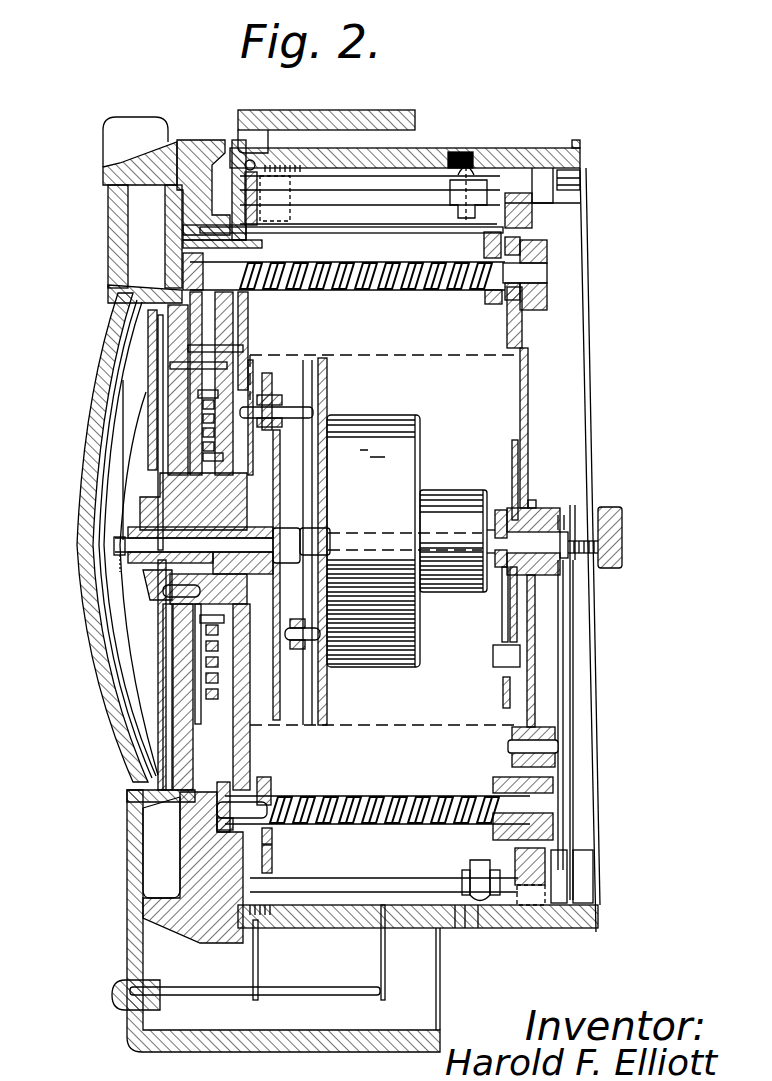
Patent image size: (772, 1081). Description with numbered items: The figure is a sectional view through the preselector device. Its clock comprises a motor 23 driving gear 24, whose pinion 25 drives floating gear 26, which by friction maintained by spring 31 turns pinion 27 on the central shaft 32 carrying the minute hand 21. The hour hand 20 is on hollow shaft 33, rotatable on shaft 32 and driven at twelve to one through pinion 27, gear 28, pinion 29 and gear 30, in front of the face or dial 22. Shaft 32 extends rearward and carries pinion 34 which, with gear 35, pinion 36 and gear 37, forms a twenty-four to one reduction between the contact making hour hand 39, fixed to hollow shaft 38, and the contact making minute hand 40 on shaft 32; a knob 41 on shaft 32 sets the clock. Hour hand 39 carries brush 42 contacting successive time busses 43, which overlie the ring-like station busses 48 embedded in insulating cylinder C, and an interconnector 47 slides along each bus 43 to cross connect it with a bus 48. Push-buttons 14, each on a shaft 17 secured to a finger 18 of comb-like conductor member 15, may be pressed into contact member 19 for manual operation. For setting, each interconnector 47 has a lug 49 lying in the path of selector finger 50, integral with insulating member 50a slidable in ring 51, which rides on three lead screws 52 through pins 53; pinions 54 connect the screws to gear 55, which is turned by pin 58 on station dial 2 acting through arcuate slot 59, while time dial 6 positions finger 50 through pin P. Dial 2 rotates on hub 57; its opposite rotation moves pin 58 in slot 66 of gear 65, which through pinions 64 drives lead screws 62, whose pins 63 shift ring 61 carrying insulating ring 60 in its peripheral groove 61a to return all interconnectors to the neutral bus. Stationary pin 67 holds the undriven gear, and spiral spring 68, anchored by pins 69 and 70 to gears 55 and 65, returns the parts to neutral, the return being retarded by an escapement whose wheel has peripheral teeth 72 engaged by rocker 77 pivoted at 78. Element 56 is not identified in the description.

The station index dial 2 is at (110, 230).
The time dial 6 is at (193, 152).
The push-buttons 14 is at (118, 993).
The comb-like conductor member 15 is at (262, 924).
The shaft 17 is at (323, 990).
The finger 18 is at (253, 968).
The contact member 19 is at (388, 962).
The hour hand 20 is at (128, 472).
The minute hand 21 is at (116, 499).
The face or dial 22 is at (158, 653).
The motor 23 is at (380, 427).
The gear 24 is at (327, 692).
The pinion 25 is at (300, 643).
The floating gear 26 is at (332, 587).
The pinion 27 is at (317, 503).
The gear 28 is at (282, 455).
The pinion 29 is at (263, 392).
The gear 30 is at (330, 603).
The spring 31 is at (320, 517).
The shaft 32 is at (377, 535).
The hollow shaft 33 is at (115, 541).
The pinion 34 is at (500, 510).
The gear 35 is at (502, 620).
The pinion 36 is at (503, 680).
The gear 37 is at (512, 447).
The hollow shaft 38 is at (538, 520).
The contact making hour hand 39 is at (563, 640).
The contact making minute hand 40 is at (575, 753).
The knob 41 is at (620, 518).
The brush 42 is at (567, 863).
The time busses 43 is at (407, 195).
The interconnector 47 is at (493, 168).
The station busses 48 is at (456, 172).
The projecting lug 49 is at (460, 212).
The selector finger 50 is at (530, 210).
The larger member of insulating material 50a is at (530, 243).
The ring 51 is at (483, 245).
The lead screw 52 is at (355, 291).
The pins 53 is at (497, 295).
The pinions 54 is at (200, 283).
The gear 55 is at (156, 320).
The core 56 is at (200, 541).
The hub 57 is at (150, 568).
The pin 58 is at (205, 365).
The arcuate slot 59 is at (230, 710).
The insulating ring 60 is at (272, 862).
The linearly movable ring 61 is at (275, 792).
The peripheral groove 61a is at (272, 838).
The lead screw 62 is at (372, 800).
The pins 63 is at (260, 778).
The pinion 64 is at (200, 820).
The gear 65 is at (200, 790).
The slot 66 is at (225, 722).
The stationary pin 67 is at (248, 345).
The spiral spring 68 is at (213, 422).
The pin 69 is at (207, 390).
The pin 70 is at (330, 455).
The peripheral teeth 72 is at (540, 837).
The escapement rocker 77 is at (547, 732).
The pivot 78 is at (553, 743).
The pin P is at (355, 230).
The cylinder of insulating material C is at (537, 930).